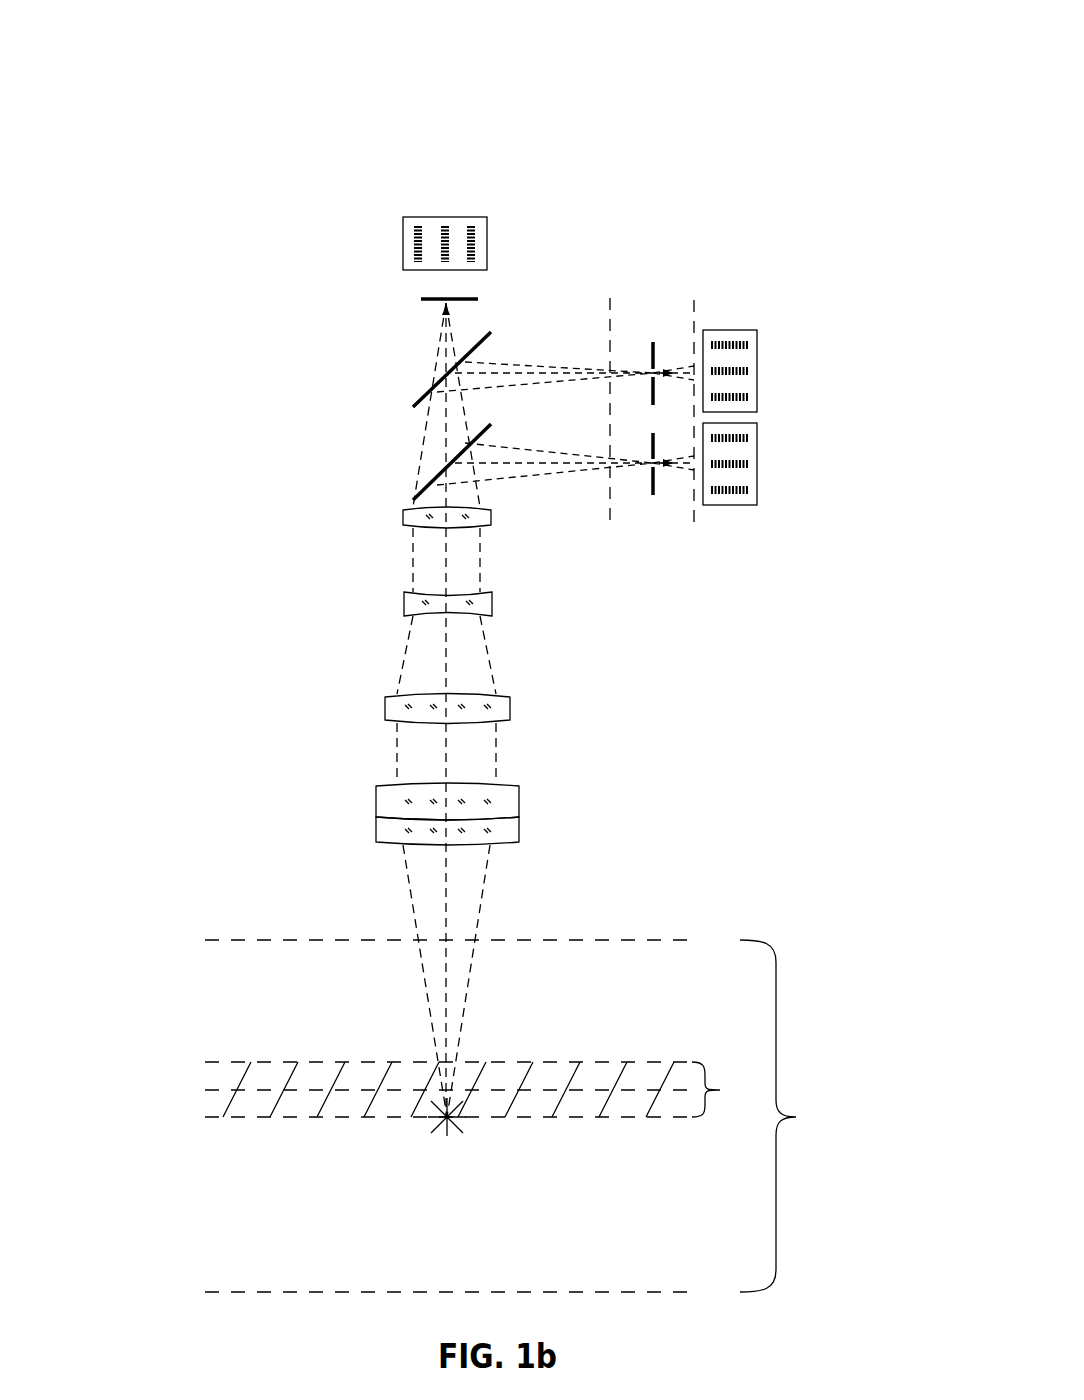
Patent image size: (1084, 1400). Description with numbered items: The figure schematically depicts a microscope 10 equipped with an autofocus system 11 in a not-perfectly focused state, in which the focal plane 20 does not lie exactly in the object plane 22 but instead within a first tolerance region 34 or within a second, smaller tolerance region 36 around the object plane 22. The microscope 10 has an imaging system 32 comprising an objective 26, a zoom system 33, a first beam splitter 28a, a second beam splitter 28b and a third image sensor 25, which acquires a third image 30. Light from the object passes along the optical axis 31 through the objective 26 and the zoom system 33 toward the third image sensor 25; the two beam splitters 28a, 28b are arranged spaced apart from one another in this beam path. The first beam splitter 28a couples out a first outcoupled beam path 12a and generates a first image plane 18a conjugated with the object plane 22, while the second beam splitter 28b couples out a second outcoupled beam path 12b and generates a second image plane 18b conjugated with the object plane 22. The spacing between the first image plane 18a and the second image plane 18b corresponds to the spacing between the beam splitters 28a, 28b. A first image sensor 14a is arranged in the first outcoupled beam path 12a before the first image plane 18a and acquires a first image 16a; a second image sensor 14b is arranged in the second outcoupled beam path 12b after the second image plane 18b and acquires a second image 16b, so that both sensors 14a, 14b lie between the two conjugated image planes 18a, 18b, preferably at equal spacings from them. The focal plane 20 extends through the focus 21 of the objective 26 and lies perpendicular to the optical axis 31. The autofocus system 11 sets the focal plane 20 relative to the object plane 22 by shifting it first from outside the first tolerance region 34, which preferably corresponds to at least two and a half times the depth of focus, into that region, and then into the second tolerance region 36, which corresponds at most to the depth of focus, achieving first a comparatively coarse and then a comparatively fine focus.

The microscope 10 is at (256, 106).
The third image 30 is at (455, 216).
The third image sensor 25 is at (423, 298).
The second beam splitter 28b is at (418, 403).
The first beam splitter 28a is at (418, 497).
The second outcoupled beam path 12b is at (505, 362).
The first outcoupled beam path 12a is at (513, 486).
The second image plane 18b is at (610, 298).
The first image plane 18a is at (694, 521).
The second image sensor 14b is at (653, 342).
The first image sensor 14a is at (653, 497).
The second image 16b is at (758, 373).
The first image 16a is at (758, 455).
The autofocus system 11 is at (736, 301).
The zoom system 33 is at (352, 560).
The imaging system 32 is at (257, 643).
The objective 26 is at (332, 818).
The optical axis 31 is at (447, 905).
The first tolerance region 34 is at (796, 1117).
The second tolerance region 36 is at (720, 1090).
The object plane 22 is at (208, 1090).
The focal plane 20 is at (208, 1118).
The focus 21 is at (447, 1124).